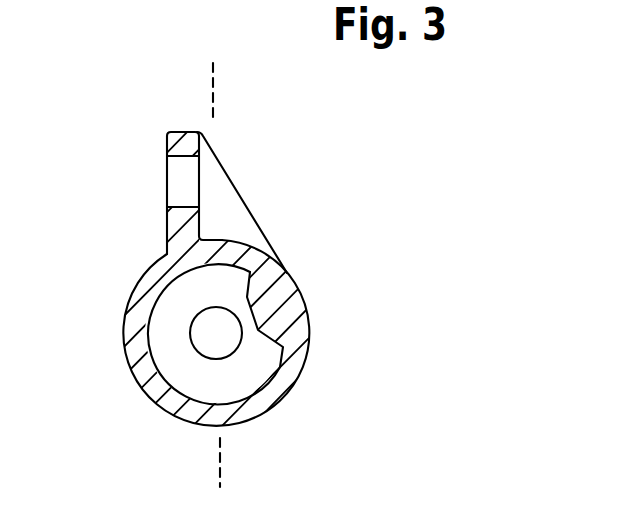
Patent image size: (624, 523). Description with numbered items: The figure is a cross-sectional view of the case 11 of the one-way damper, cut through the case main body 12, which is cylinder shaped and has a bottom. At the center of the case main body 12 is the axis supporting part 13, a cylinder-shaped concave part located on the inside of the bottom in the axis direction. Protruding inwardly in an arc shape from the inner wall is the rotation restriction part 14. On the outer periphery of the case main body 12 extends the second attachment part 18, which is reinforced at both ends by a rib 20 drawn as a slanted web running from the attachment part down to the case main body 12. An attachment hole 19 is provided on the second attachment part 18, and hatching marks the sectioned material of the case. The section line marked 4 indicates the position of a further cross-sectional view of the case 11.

The section line IV-IV 4 is at (202, 89).
The case 11 is at (322, 375).
The case main body 12 is at (131, 324).
The axis supporting part 13 is at (201, 339).
The rotation restriction part 14 is at (273, 312).
The second attachment part 18 is at (181, 226).
The attachment hole 19 is at (178, 172).
The rib 20 is at (232, 204).